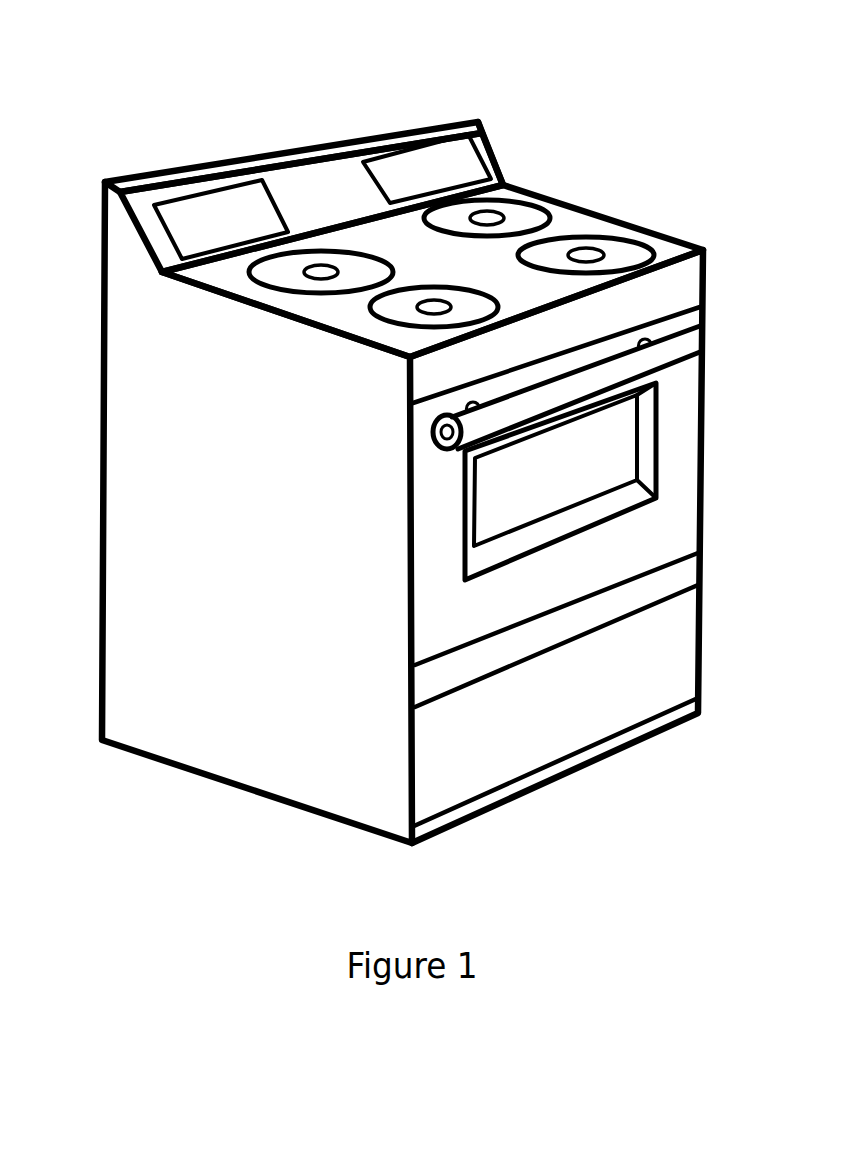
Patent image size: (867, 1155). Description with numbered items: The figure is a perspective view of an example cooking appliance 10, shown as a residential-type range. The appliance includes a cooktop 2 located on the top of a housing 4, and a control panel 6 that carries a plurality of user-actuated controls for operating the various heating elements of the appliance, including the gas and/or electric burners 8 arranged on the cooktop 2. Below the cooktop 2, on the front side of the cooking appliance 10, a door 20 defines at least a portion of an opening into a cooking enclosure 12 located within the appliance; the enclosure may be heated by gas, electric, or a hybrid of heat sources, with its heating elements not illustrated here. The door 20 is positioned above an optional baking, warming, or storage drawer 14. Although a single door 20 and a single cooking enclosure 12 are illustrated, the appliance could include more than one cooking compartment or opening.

The cooking appliance 10 is at (96, 72).
The cooktop 2 is at (563, 220).
The housing 4 is at (98, 362).
The control panel 6 is at (458, 153).
The burners 8 is at (527, 190).
The cooking enclosure 12 is at (620, 427).
The drawer 14 is at (682, 652).
The door 20 is at (682, 490).